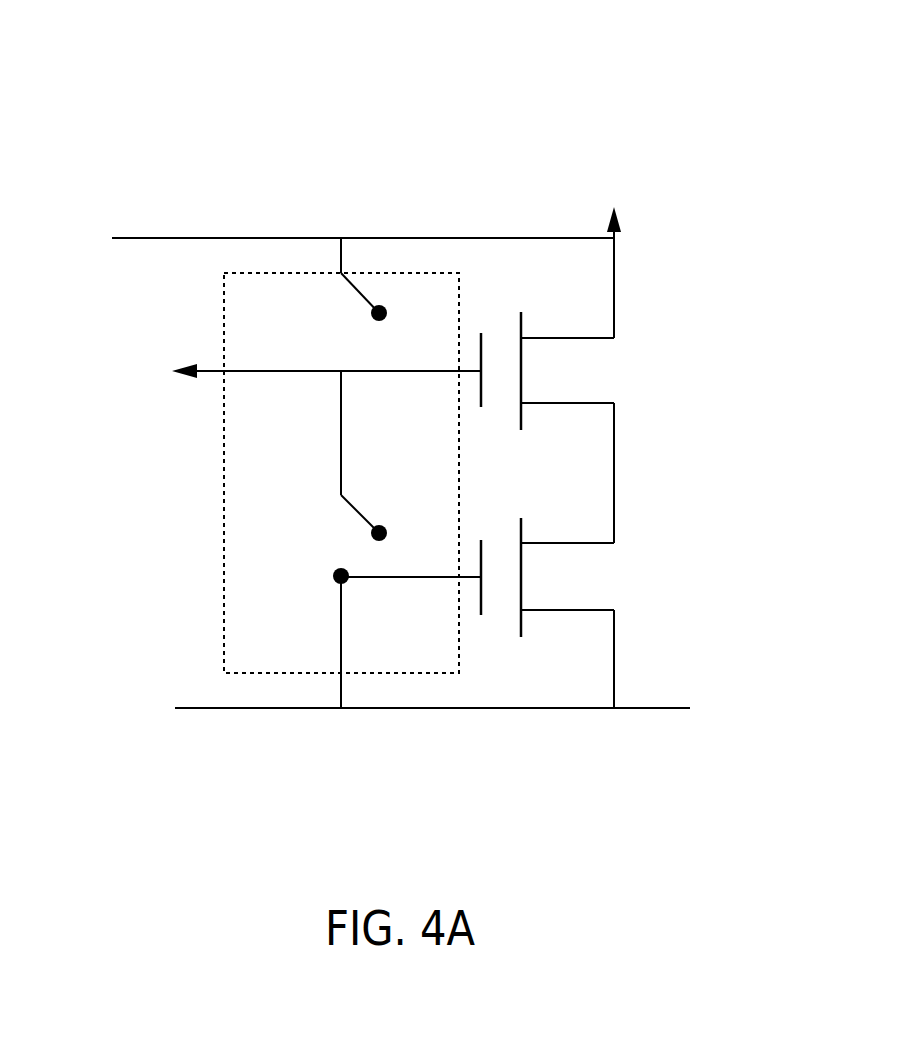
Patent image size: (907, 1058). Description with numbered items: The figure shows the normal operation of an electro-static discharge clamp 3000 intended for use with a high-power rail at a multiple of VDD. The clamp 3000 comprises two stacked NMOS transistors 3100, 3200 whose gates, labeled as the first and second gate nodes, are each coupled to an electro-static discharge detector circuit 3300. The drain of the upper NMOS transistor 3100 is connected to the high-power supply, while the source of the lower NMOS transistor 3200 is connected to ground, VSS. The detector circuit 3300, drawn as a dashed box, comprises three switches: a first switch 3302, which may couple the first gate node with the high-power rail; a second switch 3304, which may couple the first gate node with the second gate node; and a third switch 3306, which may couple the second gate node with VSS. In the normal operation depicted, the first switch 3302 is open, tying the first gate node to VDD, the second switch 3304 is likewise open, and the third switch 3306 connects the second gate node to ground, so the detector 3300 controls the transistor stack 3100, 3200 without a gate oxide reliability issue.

The electro-static discharge clamp 3000 is at (808, 127).
The NMOS transistor 3100 is at (568, 371).
The NMOS transistor 3200 is at (568, 577).
The electro-static discharge detector circuit 3300 is at (341, 473).
The switch 1 3302 is at (315, 279).
The switch 2 3304 is at (315, 456).
The switch 3 3306 is at (296, 638).